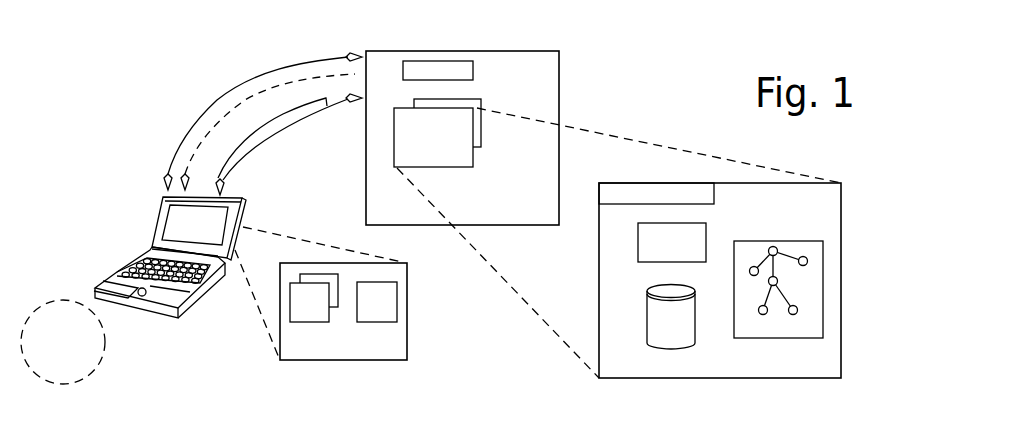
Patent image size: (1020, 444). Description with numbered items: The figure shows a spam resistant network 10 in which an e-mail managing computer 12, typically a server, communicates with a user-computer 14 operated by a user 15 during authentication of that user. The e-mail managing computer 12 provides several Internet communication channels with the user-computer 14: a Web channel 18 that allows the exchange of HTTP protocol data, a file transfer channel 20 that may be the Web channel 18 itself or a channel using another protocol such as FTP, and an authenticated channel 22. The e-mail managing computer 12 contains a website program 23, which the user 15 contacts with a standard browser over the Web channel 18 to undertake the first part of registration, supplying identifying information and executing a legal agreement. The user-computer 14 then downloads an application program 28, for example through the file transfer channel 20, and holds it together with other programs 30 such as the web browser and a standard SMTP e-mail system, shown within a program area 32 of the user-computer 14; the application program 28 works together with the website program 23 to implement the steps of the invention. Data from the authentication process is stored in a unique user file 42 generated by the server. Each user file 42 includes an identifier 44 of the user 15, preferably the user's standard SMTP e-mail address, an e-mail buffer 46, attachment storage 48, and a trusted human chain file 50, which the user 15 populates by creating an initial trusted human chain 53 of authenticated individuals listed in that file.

The spam resistant network 10 is at (579, 34).
The e-mail managing computer 12 is at (376, 51).
The user-computer 14 is at (153, 240).
The user 15 is at (63, 342).
The Web channel 18 is at (217, 100).
The file transfer channel 20 is at (215, 133).
The authenticated channel 22 is at (236, 172).
The website program 23 is at (462, 70).
The application program 28 is at (387, 300).
The other programs 30 is at (333, 310).
The client application 32 is at (407, 340).
The user file 42 is at (481, 130).
The identifier 44 is at (607, 193).
The e-mail buffer 46 is at (672, 242).
The attachment storage 48 is at (671, 317).
The trusted human chain file 50 is at (813, 328).
The trusted human chain 53 is at (805, 253).